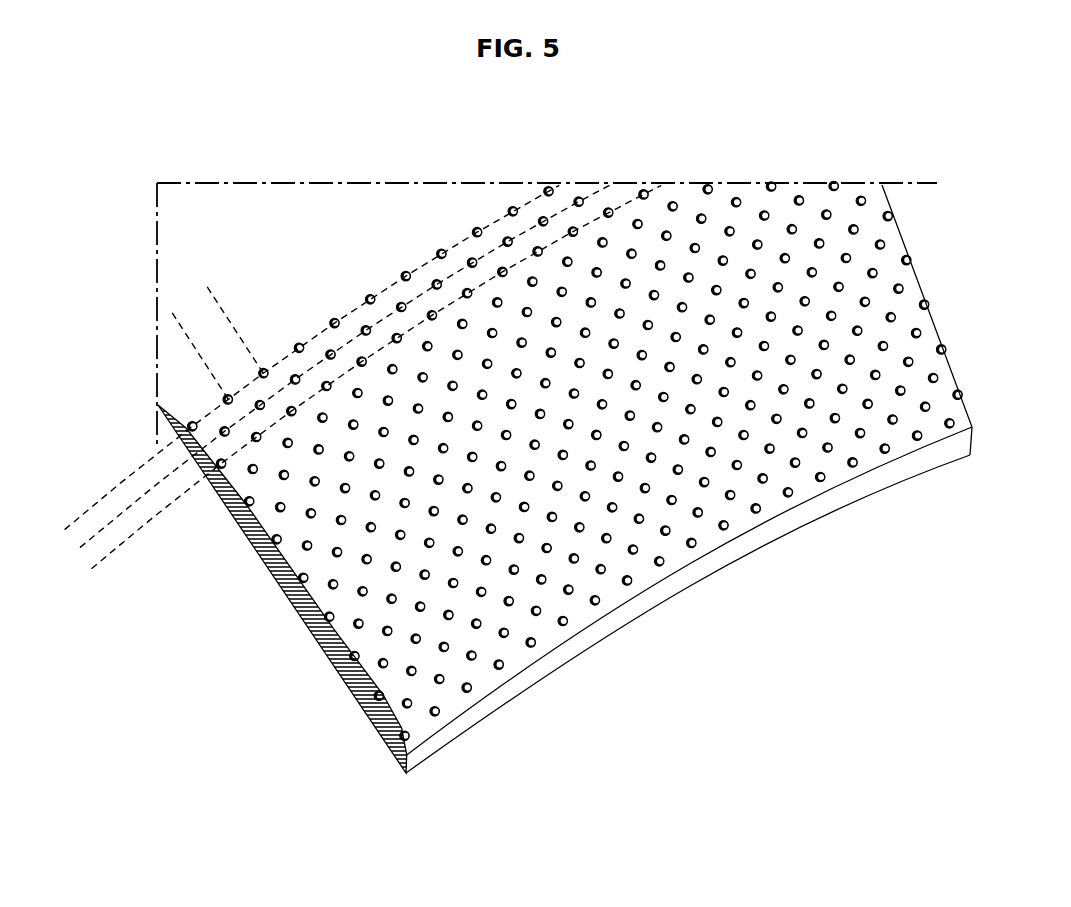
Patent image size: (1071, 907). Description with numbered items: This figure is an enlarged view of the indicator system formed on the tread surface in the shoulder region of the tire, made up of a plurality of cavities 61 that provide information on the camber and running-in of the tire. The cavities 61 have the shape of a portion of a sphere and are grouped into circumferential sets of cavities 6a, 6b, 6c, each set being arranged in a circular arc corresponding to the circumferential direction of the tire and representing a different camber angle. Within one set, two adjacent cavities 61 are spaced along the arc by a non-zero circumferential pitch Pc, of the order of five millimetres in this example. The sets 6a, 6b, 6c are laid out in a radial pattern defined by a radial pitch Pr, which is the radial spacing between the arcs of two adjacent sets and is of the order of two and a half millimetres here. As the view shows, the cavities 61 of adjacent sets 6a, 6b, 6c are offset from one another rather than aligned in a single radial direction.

The cavities 61 is at (575, 438).
The circumferential set of cavities 6a is at (122, 480).
The circumferential set of cavities 6b is at (90, 537).
The circumferential set of cavities 6c is at (113, 547).
The circumferential pitch Pc is at (178, 327).
The radial pitch Pr is at (128, 523).